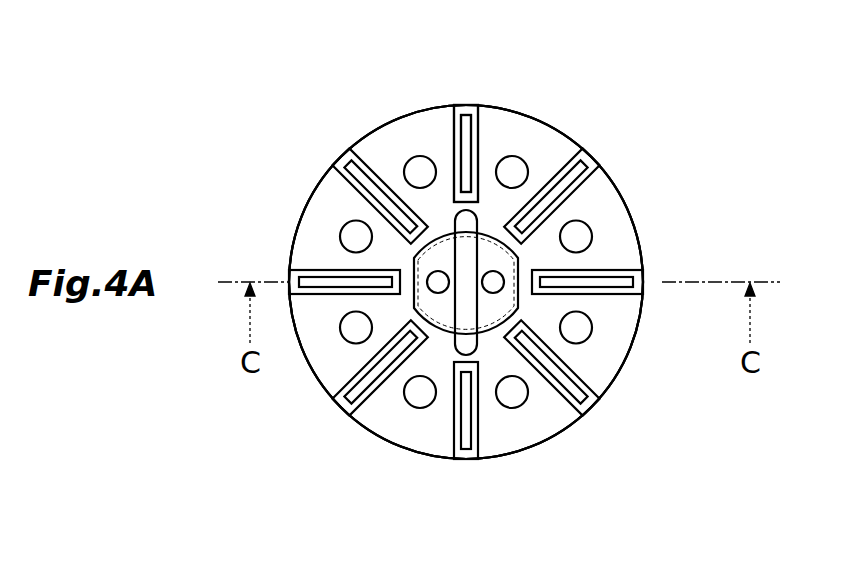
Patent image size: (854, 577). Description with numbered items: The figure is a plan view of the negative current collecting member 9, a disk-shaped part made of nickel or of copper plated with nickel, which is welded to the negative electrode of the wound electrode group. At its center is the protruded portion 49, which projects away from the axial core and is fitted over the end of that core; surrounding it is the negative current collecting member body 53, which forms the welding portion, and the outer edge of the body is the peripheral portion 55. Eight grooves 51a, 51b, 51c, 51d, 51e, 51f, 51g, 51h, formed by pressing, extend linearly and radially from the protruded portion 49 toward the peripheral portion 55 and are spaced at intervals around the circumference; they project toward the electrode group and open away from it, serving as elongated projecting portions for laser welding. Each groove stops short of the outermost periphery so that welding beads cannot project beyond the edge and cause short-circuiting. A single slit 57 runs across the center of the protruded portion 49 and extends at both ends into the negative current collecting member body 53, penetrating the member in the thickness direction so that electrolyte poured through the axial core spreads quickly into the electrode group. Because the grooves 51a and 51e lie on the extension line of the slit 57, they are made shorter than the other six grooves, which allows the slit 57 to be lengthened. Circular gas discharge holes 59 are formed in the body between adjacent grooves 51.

The negative current collecting member 9 is at (411, 97).
The protruded portion 49 is at (497, 303).
The grooves 51 is at (480, 106).
The groove 51a is at (463, 105).
The groove 51b is at (590, 150).
The groove 51c is at (642, 288).
The groove 51d is at (585, 412).
The groove 51e is at (478, 462).
The groove 51f is at (350, 410).
The groove 51g is at (305, 272).
The groove 51h is at (337, 160).
The negative current collecting member body 53 is at (382, 415).
The peripheral portion 55 is at (616, 183).
The slit 57 is at (472, 345).
The gas discharge holes 59 is at (413, 168).